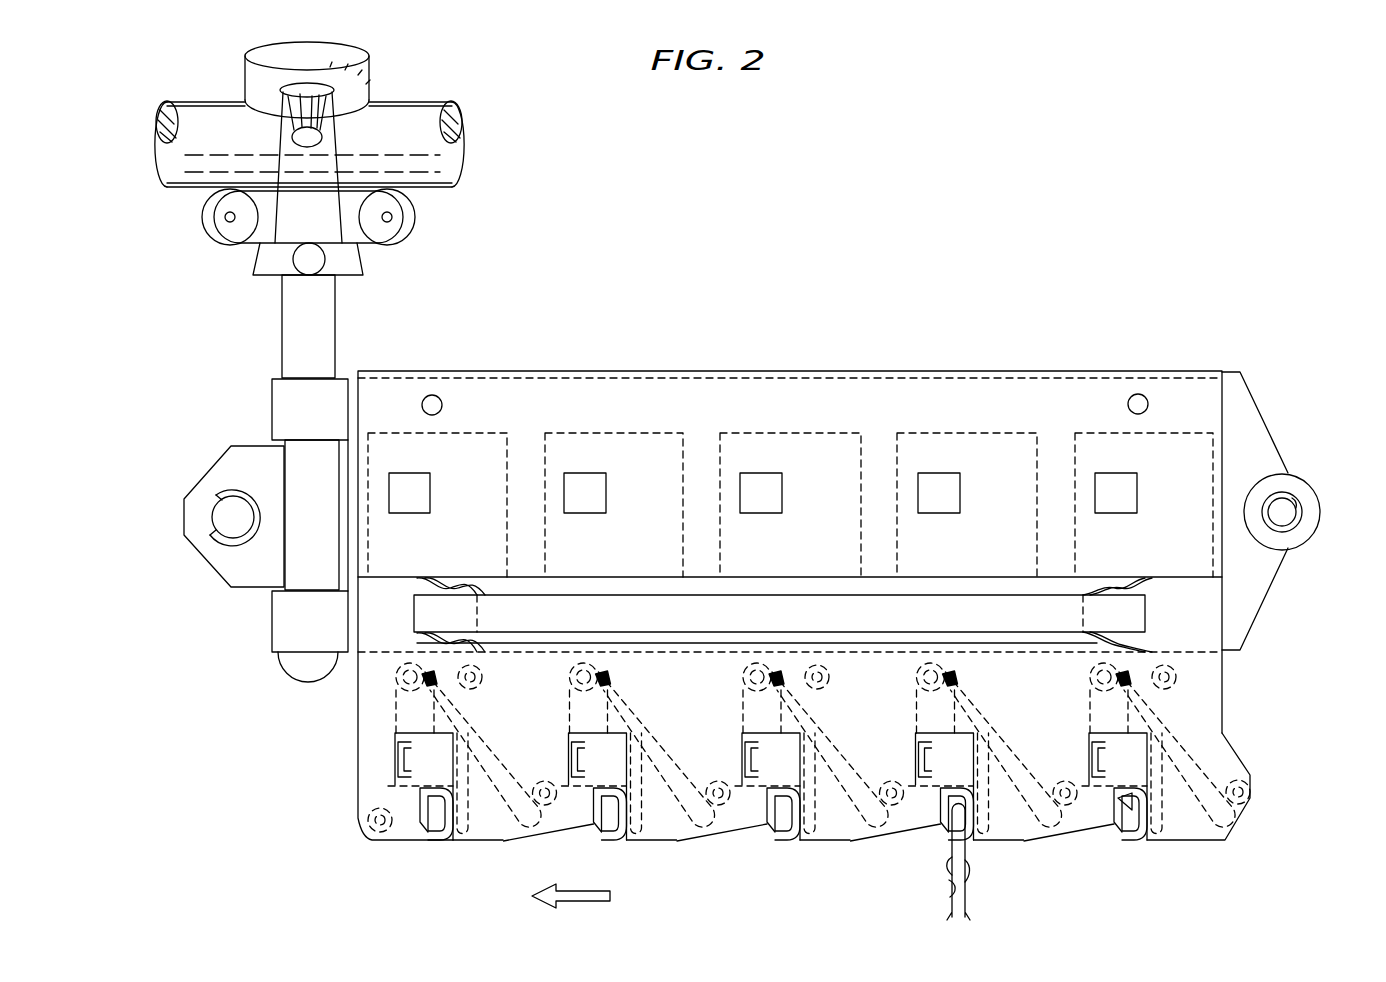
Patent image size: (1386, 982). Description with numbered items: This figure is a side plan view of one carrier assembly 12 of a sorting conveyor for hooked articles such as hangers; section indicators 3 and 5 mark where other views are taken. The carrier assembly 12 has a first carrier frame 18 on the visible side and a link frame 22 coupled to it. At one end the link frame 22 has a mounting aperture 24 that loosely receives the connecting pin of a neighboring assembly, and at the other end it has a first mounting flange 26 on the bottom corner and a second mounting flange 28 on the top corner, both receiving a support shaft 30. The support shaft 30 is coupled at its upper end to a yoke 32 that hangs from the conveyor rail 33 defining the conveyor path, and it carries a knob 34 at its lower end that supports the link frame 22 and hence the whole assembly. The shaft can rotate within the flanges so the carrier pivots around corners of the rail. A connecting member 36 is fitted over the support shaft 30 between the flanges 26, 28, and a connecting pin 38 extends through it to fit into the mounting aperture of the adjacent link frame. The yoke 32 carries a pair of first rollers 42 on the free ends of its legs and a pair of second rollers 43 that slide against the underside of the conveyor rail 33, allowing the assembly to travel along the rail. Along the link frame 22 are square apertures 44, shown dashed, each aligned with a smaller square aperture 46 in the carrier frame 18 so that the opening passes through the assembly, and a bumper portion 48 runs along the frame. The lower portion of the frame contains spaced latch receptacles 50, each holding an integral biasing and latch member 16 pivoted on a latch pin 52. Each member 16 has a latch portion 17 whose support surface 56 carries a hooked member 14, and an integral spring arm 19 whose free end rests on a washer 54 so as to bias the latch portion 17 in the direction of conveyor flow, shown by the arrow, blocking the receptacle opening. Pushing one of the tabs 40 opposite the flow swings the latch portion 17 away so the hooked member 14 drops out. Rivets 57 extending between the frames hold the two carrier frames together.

The section line 3- 3 is at (1320, 567).
The section line 5- 5 is at (455, 678).
The carrier assembly 12 is at (743, 364).
The hooked member 14 is at (967, 853).
The integral biasing and latch member 16 is at (436, 764).
The latch portion 17 is at (432, 760).
The first carrier frame 18 is at (1033, 393).
The spring arm 19 is at (538, 805).
The link frame 22 is at (1265, 427).
The mounting aperture 24 is at (1290, 500).
The first mounting flange 26 is at (272, 614).
The second mounting flange 28 is at (272, 388).
The support shaft 30 is at (347, 378).
The yoke 32 is at (330, 155).
The conveyor rail 33 is at (414, 100).
The knob 34 is at (303, 676).
The connecting member 36 is at (247, 446).
The connecting pin 38 is at (219, 506).
The tabs 40 is at (433, 757).
The first rollers 42 is at (250, 84).
The second rollers 43 is at (203, 223).
The square apertures 44 is at (465, 433).
The square apertures 46 is at (430, 497).
The bumper portion 48 is at (642, 598).
The latch receptacle 50 is at (428, 805).
The latch pin 52 is at (395, 677).
The washer 54 is at (578, 840).
The support surface 56 is at (1140, 800).
The rivets 57 is at (433, 396).